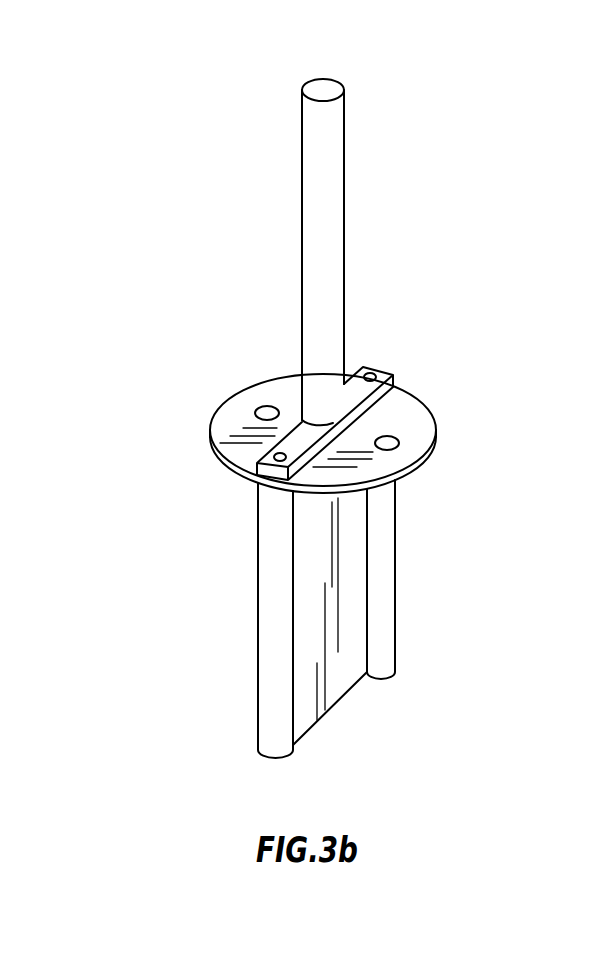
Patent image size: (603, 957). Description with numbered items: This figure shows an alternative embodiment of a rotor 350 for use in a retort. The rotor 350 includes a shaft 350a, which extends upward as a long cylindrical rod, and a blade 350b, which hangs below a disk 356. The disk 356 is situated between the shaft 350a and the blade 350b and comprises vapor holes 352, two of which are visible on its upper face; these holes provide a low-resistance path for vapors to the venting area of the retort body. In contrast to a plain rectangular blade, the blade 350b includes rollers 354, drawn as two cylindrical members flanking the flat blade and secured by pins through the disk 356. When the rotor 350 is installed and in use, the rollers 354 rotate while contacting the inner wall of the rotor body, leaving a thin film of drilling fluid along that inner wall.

The rotor 350 is at (352, 418).
The shaft 350a is at (302, 157).
The blade 350b is at (352, 530).
The vapor holes 352 is at (390, 440).
The rollers 354 is at (258, 612).
The disk 356 is at (213, 448).